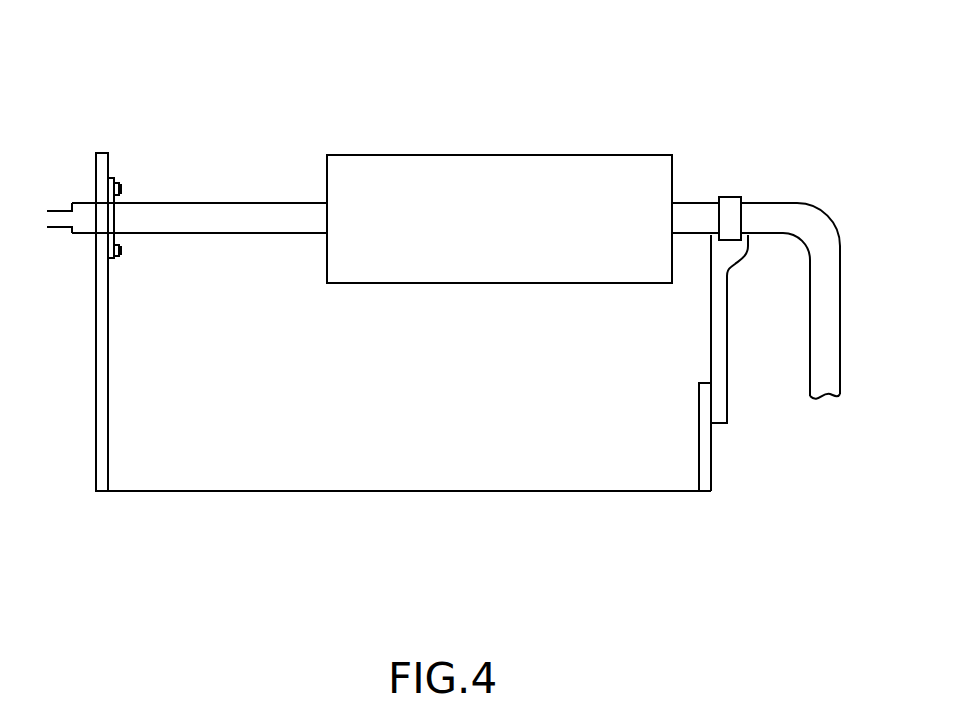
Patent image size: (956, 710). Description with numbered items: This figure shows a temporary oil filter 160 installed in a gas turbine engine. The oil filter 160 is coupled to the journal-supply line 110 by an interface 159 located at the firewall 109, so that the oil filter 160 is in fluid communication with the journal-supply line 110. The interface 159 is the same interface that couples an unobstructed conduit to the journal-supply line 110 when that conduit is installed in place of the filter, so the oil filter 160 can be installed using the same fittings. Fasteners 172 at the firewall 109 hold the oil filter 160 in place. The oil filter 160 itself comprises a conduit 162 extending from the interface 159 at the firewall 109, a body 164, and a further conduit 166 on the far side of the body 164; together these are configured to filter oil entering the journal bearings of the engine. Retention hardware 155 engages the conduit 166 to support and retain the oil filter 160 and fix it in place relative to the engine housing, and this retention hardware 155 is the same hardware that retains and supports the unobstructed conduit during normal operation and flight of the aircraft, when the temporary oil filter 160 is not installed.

The oil filter 160 is at (618, 115).
The firewall 109 is at (96, 168).
The journal-supply line 110 is at (59, 211).
The interface 159 is at (122, 193).
The conduit 162 is at (212, 215).
The body 164 is at (663, 175).
The retention hardware 155 is at (733, 207).
The conduit 166 is at (812, 215).
The fasteners 172 is at (122, 249).